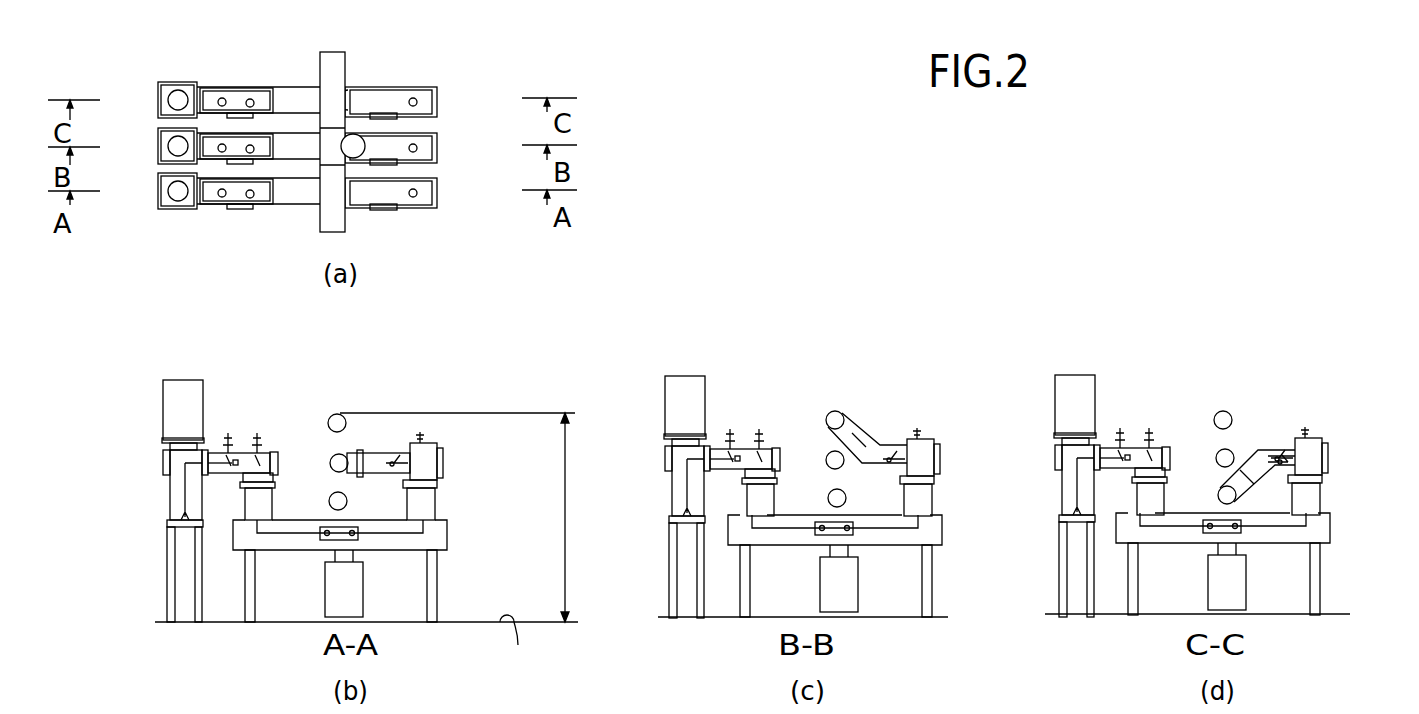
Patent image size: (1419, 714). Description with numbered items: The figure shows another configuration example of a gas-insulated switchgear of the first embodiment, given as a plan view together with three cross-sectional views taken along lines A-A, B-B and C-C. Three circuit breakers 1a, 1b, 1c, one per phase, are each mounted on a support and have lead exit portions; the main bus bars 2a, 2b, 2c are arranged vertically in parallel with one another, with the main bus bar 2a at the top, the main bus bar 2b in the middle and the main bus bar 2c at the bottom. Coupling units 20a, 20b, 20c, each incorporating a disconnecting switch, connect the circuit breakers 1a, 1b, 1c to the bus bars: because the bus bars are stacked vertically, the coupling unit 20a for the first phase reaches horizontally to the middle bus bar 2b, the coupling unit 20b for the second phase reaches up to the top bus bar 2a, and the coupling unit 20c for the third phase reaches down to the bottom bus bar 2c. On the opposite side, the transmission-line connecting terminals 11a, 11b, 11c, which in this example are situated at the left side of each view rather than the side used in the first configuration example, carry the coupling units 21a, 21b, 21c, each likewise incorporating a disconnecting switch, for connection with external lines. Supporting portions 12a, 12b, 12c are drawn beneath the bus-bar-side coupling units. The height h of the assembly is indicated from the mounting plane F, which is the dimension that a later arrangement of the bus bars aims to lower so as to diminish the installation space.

The circuit breaker 1a is at (447, 540).
The circuit breaker 1b is at (938, 547).
The circuit breaker 1c is at (1323, 538).
The main bus bar 2a is at (345, 63).
The main bus bar 2b is at (331, 457).
The main bus bar 2c is at (329, 498).
The transmission-line connecting terminal 11a is at (243, 503).
The transmission-line connecting terminal 11b is at (747, 503).
The transmission-line connecting terminal 11c is at (1132, 512).
The support column 12a is at (438, 505).
The support column 12b is at (932, 500).
The support column 12c is at (1306, 499).
The coupling unit 20a is at (442, 192).
The coupling unit 20b is at (438, 148).
The coupling unit 20c is at (438, 92).
The coupling unit 21a is at (160, 177).
The coupling unit 21b is at (158, 148).
The coupling unit 21c is at (160, 84).
The height h is at (457, 517).
The mounting plane F is at (522, 649).